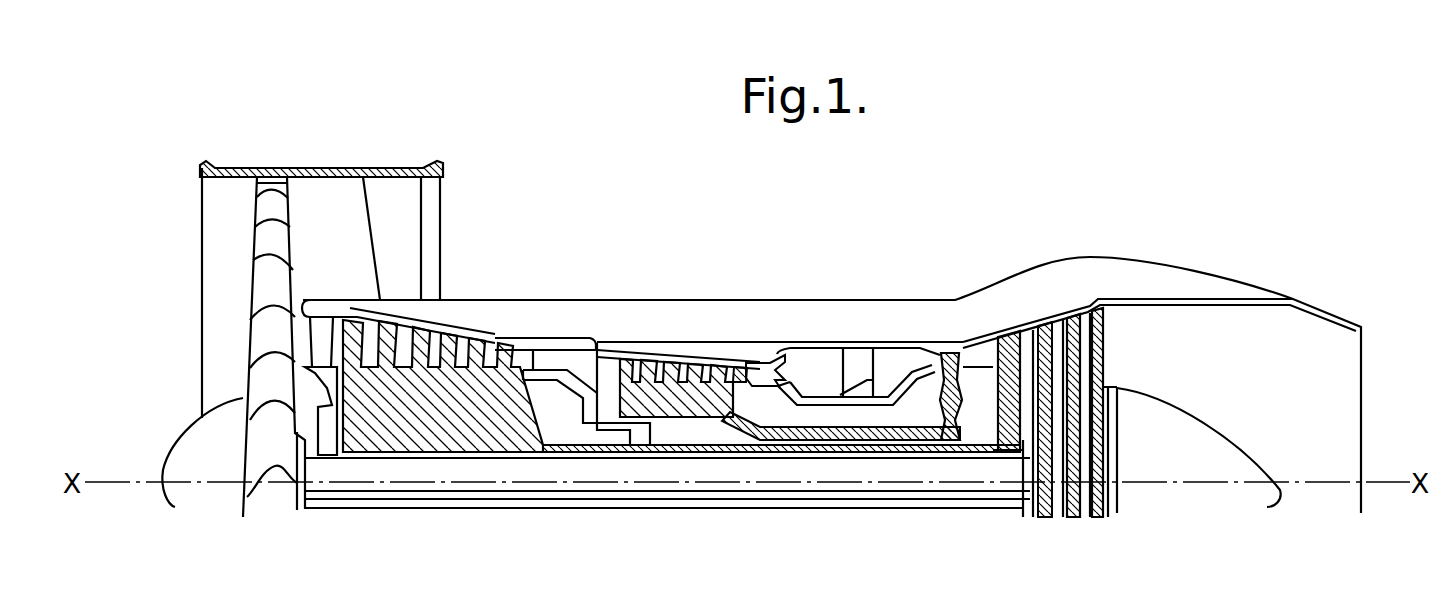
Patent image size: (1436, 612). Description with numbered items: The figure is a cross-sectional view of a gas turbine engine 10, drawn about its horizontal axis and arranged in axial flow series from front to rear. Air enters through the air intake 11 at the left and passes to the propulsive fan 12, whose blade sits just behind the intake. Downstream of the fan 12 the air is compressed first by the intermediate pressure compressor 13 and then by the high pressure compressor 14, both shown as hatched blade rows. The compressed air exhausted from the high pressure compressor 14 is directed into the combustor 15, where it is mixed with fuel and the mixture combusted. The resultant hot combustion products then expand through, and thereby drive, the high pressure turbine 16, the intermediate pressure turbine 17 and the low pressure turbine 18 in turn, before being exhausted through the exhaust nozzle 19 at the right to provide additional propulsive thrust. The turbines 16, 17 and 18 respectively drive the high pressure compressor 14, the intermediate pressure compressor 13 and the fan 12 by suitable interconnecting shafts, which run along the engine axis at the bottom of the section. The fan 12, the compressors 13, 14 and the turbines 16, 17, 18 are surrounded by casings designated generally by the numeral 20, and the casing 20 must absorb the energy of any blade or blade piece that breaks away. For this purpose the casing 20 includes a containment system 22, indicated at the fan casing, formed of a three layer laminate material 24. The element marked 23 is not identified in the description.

The gas turbine engine 10 is at (617, 246).
The air intake 11 is at (181, 305).
The propulsive fan 12 is at (277, 207).
The intermediate pressure compressor 13 is at (440, 365).
The high pressure compressor 14 is at (679, 358).
The combustor 15 is at (860, 336).
The high pressure turbine 16 is at (953, 340).
The intermediate pressure turbine 17 is at (1007, 343).
The low pressure turbine 18 is at (1070, 345).
The exhaust nozzle 19 is at (1320, 433).
The casing 20 is at (344, 183).
The containment system 22 is at (250, 164).
The fuel injector 23 is at (803, 345).
The three layer laminate material 24 is at (281, 163).